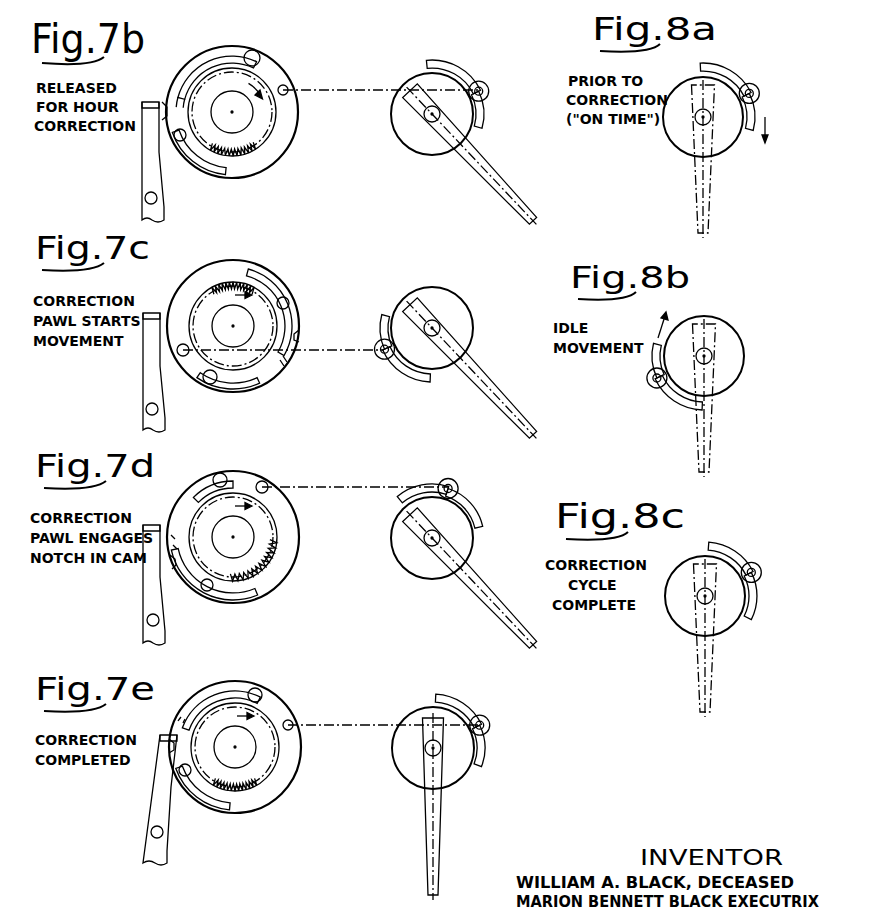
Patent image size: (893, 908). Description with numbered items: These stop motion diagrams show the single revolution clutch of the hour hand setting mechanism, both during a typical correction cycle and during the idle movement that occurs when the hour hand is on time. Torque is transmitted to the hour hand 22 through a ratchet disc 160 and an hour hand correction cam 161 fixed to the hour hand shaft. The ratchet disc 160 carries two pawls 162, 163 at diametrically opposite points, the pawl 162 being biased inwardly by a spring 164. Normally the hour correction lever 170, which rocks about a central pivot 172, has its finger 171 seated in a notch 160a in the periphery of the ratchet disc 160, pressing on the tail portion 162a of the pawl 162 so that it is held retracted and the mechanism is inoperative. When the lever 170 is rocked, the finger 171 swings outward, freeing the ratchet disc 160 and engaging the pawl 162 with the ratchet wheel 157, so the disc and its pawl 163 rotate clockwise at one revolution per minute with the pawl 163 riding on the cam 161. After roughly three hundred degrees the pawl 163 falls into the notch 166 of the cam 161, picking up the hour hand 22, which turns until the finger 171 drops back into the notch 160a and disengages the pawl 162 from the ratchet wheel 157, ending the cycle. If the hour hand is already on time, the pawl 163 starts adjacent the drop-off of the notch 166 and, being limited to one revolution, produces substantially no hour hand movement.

In FIG. 7B, the hour hand 22 is at (470, 154).
In FIG. 8A, the hour hand 22 is at (723, 159).
In FIG. 7C, the hour hand 22 is at (470, 368).
In FIG. 8B, the hour hand 22 is at (722, 398).
In FIG. 7D, the hour hand 22 is at (470, 578).
In FIG. 8C, the hour hand 22 is at (723, 638).
In FIG. 7E, the hour hand 22 is at (413, 806).
In FIG. 7B, the ratchet wheel 157 is at (250, 173).
In FIG. 7C, the ratchet wheel 157 is at (229, 263).
In FIG. 7D, the ratchet wheel 157 is at (274, 575).
In FIG. 7E, the ratchet wheel 157 is at (247, 810).
In FIG. 7B, the ratchet disc 160 is at (322, 112).
In FIG. 7C, the ratchet disc 160 is at (275, 343).
In FIG. 7D, the ratchet disc 160 is at (307, 537).
In FIG. 7E, the ratchet disc 160 is at (324, 747).
In FIG. 7B, the notch 160a is at (132, 131).
In FIG. 7C, the notch 160a is at (319, 322).
In FIG. 7D, the notch 160a is at (137, 583).
In FIG. 7E, the notch 160a is at (139, 765).
In FIG. 7B, the hour hand correction cam 161 is at (432, 130).
In FIG. 8A, the hour hand correction cam 161 is at (702, 122).
In FIG. 7C, the hour hand correction cam 161 is at (432, 308).
In FIG. 8B, the hour hand correction cam 161 is at (718, 362).
In FIG. 7D, the hour hand correction cam 161 is at (425, 549).
In FIG. 8C, the hour hand correction cam 161 is at (717, 608).
In FIG. 7E, the hour hand correction cam 161 is at (418, 753).
In FIG. 7B, the pawl 162 is at (199, 170).
In FIG. 7C, the pawl 162 is at (286, 307).
In FIG. 7D, the pawl 162 is at (214, 592).
In FIG. 7E, the pawl 162 is at (203, 805).
In FIG. 7B, the tail portion 162a is at (212, 90).
In FIG. 7C, the tail portion 162a is at (309, 371).
In FIG. 7D, the tail portion 162a is at (137, 563).
In FIG. 7E, the tail portion 162a is at (190, 694).
In FIG. 7B, the pawl 163 is at (464, 70).
In FIG. 8A, the pawl 163 is at (736, 63).
In FIG. 7C, the pawl 163 is at (399, 376).
In FIG. 8B, the pawl 163 is at (672, 403).
In FIG. 7D, the pawl 163 is at (427, 473).
In FIG. 8C, the pawl 163 is at (745, 549).
In FIG. 7E, the pawl 163 is at (475, 706).
In FIG. 7B, the spring 164 is at (217, 60).
In FIG. 7C, the spring 164 is at (251, 392).
In FIG. 7D, the spring 164 is at (209, 472).
In FIG. 7E, the spring 164 is at (221, 692).
In FIG. 7B, the notch 166 is at (497, 109).
In FIG. 8A, the notch 166 is at (753, 133).
In FIG. 7C, the notch 166 is at (446, 313).
In FIG. 8B, the notch 166 is at (721, 360).
In FIG. 7D, the notch 166 is at (479, 515).
In FIG. 8C, the notch 166 is at (763, 604).
In FIG. 7E, the notch 166 is at (487, 763).
In FIG. 7B, the hour correction lever 170 is at (129, 163).
In FIG. 7C, the hour correction lever 170 is at (130, 374).
In FIG. 7D, the hour correction lever 170 is at (128, 588).
In FIG. 7E, the hour correction lever 170 is at (136, 800).
In FIG. 7B, the finger 171 is at (157, 81).
In FIG. 7C, the finger 171 is at (157, 295).
In FIG. 7D, the finger 171 is at (156, 509).
In FIG. 7E, the finger 171 is at (152, 724).
In FIG. 7B, the central pivot 172 is at (126, 198).
In FIG. 7C, the central pivot 172 is at (127, 407).
In FIG. 7D, the central pivot 172 is at (127, 622).
In FIG. 7E, the central pivot 172 is at (130, 834).